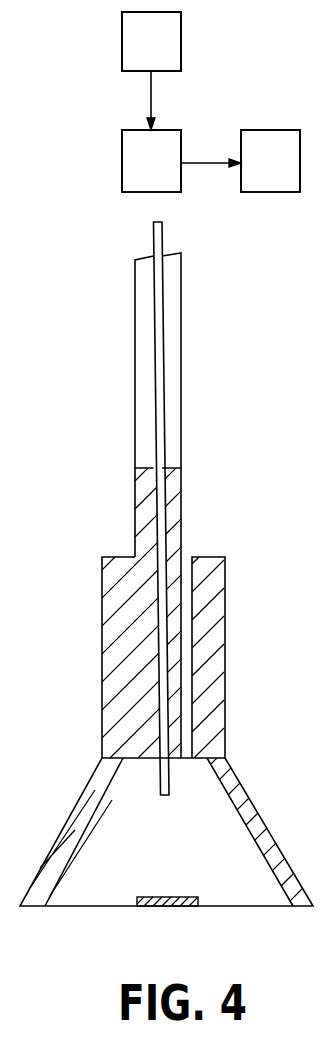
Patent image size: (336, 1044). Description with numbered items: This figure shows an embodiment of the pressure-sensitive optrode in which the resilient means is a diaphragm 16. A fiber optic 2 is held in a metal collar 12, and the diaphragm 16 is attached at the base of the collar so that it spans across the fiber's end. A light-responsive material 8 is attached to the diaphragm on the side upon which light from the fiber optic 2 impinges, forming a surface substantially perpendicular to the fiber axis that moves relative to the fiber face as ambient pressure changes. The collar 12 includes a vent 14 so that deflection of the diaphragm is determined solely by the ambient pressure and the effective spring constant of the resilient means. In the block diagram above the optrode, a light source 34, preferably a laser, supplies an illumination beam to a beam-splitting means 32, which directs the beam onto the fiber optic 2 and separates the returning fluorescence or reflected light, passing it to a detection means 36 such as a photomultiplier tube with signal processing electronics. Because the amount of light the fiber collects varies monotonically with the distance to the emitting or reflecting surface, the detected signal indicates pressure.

The fiber optic 2 is at (153, 243).
The light-responsive material 8 is at (176, 906).
The metal collar 12 is at (225, 640).
The vent 14 is at (187, 556).
The diaphragm 16 is at (268, 906).
The beam-splitting means 32 is at (139, 174).
The light source 34 is at (139, 54).
The detection means 36 is at (258, 174).